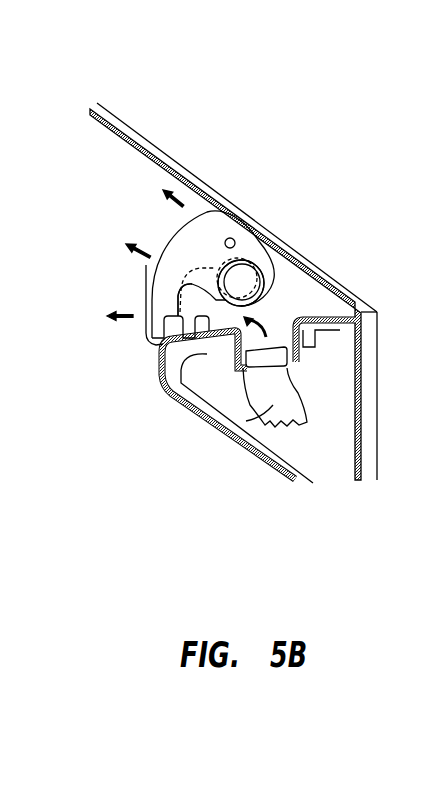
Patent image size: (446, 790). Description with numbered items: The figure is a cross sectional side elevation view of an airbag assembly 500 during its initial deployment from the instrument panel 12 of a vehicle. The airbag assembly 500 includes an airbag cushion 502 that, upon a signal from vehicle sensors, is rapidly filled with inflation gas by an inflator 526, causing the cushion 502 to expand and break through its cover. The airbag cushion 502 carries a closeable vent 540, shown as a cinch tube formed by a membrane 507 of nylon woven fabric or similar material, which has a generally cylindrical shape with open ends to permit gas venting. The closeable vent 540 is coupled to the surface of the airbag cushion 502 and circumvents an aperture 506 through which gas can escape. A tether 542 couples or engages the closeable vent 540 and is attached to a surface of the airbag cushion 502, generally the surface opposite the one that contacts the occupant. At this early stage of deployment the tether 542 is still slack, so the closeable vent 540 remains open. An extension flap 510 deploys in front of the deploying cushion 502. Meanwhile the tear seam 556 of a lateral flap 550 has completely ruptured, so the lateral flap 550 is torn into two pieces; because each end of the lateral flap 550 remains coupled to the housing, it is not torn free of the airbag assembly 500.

The panel 12 is at (338, 448).
The airbag assembly 500 is at (152, 360).
The airbag cushion 502 is at (205, 232).
The aperture 506 is at (242, 272).
The membrane 507 is at (263, 264).
The extension flap 510 is at (155, 357).
The inflator 526 is at (242, 362).
The closeable vent 540 is at (272, 275).
The tether 542 is at (190, 278).
The lateral flap 550 is at (278, 372).
The tear seam 556 is at (277, 418).